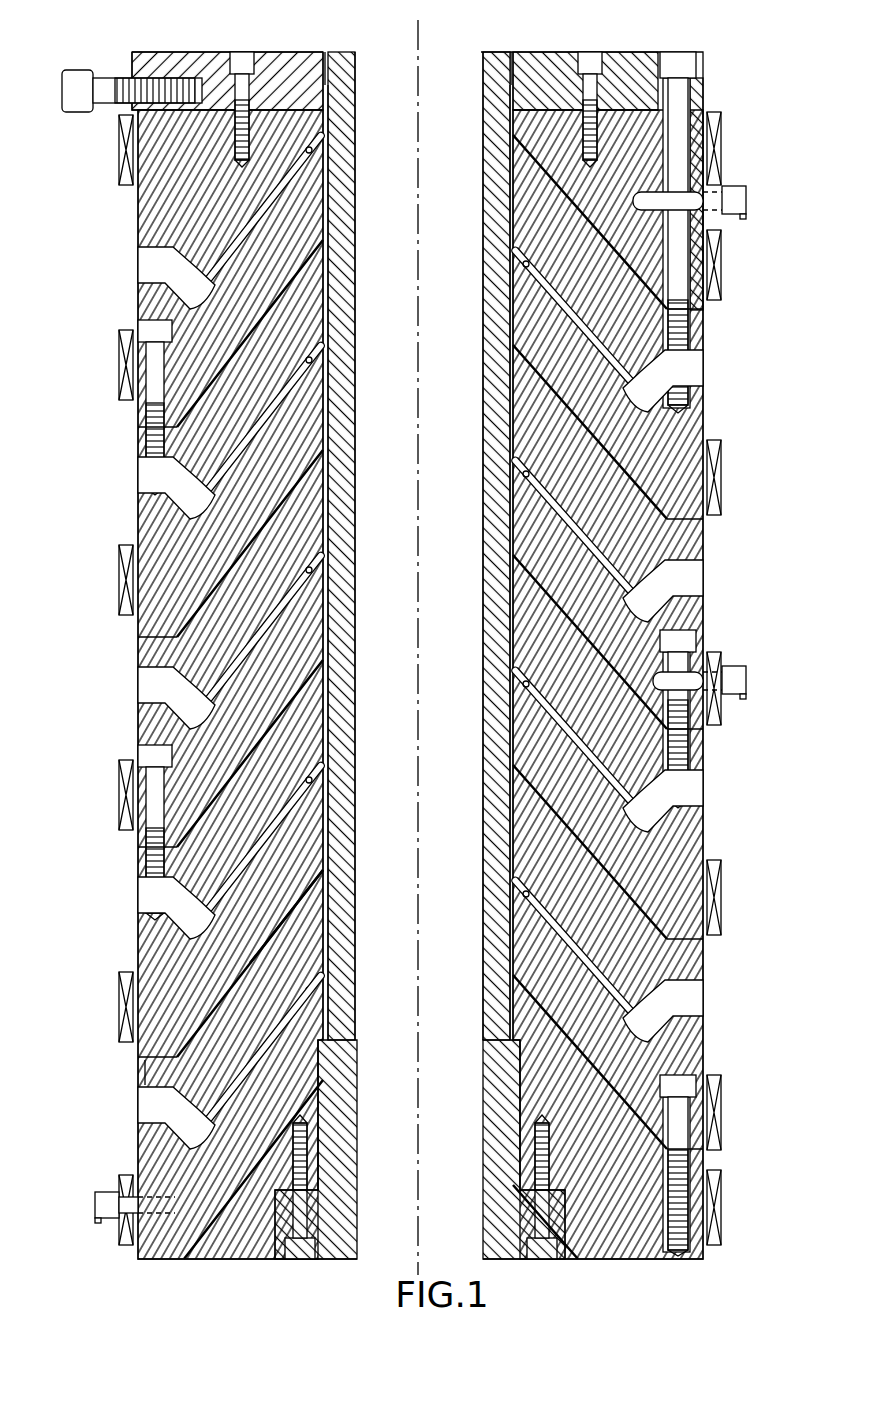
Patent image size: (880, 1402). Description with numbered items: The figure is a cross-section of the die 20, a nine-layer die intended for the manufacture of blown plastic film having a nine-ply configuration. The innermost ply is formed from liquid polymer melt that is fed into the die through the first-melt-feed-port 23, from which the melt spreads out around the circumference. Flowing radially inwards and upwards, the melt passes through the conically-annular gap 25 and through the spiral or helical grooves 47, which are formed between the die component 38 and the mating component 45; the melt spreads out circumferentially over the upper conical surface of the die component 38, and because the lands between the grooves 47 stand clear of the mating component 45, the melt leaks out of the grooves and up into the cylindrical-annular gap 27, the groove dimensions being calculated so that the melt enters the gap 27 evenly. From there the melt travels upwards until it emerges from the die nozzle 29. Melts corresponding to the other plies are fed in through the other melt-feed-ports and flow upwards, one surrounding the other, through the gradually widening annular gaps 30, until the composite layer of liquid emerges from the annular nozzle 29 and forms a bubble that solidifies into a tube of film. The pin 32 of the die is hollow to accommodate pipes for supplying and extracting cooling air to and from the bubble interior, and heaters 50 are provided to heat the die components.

The die 20 is at (504, 36).
The first-melt-feed-port 23 is at (138, 1117).
The conically-annular gap 25 is at (223, 1103).
The cylindrical-annular gap 27 is at (330, 905).
The die nozzle 29 is at (324, 52).
The gradually widening annular gaps 30 is at (330, 428).
The pin 32 is at (345, 168).
The die component 38 is at (307, 1090).
The mating component 45 is at (310, 955).
The spiral or helical grooves 47 is at (282, 1010).
The heaters 50 is at (718, 468).